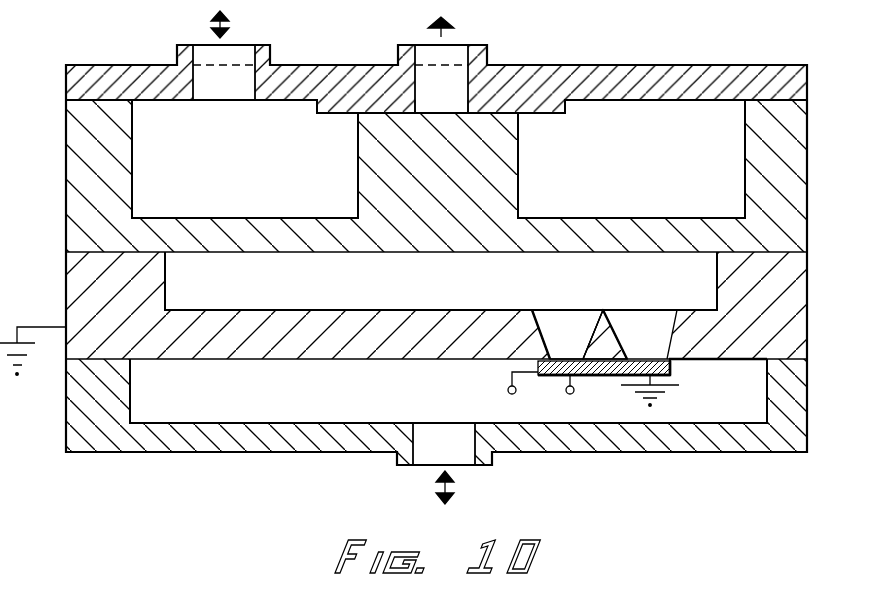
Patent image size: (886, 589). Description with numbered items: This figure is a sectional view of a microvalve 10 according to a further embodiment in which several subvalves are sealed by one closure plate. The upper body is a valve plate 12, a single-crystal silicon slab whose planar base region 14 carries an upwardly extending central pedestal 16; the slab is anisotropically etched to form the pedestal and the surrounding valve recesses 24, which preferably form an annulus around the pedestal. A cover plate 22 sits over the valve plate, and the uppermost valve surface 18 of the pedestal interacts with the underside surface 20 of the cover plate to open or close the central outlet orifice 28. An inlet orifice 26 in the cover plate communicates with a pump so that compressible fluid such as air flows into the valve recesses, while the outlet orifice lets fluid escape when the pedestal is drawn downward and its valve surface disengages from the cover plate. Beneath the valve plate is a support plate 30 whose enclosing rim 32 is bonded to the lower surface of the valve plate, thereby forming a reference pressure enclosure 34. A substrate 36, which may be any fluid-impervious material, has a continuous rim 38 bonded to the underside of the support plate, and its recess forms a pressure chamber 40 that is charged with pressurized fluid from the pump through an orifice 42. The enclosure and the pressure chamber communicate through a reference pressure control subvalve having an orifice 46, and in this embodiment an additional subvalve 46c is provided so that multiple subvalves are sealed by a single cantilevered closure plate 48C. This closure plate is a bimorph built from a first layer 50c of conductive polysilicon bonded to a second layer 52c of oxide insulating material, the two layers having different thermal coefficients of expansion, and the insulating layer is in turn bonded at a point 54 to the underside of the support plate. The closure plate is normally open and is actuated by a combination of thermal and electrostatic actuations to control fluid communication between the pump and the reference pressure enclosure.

The microvalve 10 is at (769, 51).
The valve plate 12 is at (53, 103).
The planar base region 14 is at (226, 193).
The central pedestal 16 is at (519, 191).
The uppermost valve surface 18 is at (455, 110).
The underside surface 20 is at (552, 119).
The cover plate 22 is at (668, 82).
The valve recesses 24 is at (283, 162).
The inlet orifice 26 is at (241, 52).
The outlet orifice 28 is at (430, 50).
The support plate 30 is at (820, 252).
The enclosing rim 32 is at (150, 293).
The reference pressure enclosure 34 is at (466, 292).
The substrate 36 is at (53, 357).
The continuous rim 38 is at (122, 406).
The pressure chamber 40 is at (371, 412).
The orifice 42 is at (420, 468).
The subvalve orifice 46 is at (617, 320).
The subvalve 46c is at (568, 334).
The closure plate 48C is at (609, 378).
The first layer 50c is at (687, 370).
The second layer 52c is at (672, 362).
The bonding point 54 is at (627, 353).